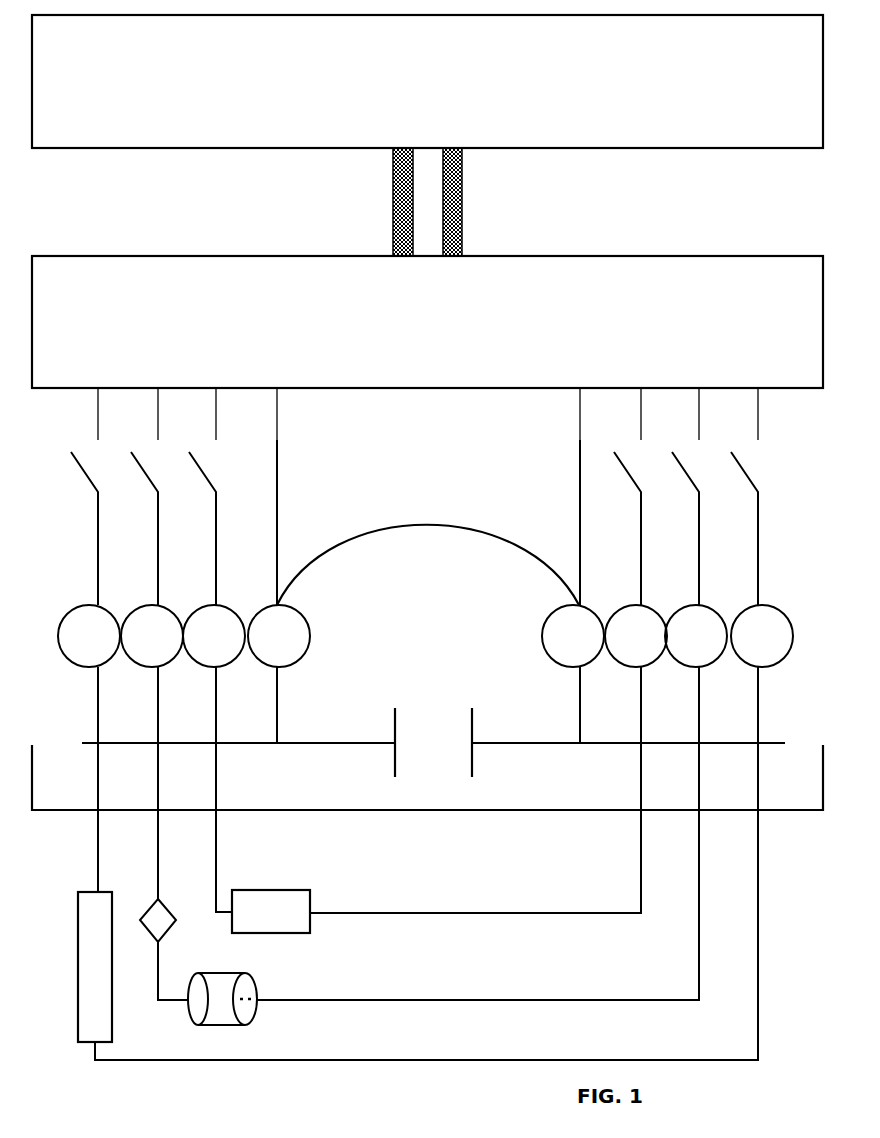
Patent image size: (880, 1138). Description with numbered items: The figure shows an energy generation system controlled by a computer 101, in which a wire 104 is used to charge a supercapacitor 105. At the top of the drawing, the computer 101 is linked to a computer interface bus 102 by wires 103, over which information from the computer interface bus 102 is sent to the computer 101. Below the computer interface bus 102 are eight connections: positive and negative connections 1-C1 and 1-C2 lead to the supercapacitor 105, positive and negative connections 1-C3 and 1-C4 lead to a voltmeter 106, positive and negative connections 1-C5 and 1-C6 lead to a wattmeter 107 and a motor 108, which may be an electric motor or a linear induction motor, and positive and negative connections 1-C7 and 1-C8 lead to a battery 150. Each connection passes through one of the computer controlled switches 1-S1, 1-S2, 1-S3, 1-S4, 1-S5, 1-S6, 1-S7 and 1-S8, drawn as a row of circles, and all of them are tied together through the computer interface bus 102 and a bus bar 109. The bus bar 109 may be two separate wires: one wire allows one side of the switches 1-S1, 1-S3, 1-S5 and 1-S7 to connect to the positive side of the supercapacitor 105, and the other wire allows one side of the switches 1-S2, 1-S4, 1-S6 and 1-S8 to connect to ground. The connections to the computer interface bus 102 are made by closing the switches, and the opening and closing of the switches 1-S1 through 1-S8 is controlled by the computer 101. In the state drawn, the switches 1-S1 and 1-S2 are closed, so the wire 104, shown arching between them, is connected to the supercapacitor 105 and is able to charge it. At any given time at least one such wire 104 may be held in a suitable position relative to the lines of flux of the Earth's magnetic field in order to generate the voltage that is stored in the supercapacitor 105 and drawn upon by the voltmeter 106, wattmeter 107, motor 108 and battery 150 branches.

The computer 101 is at (427, 81).
The computer interface bus 102 is at (427, 322).
The wires 103 is at (488, 206).
The wire 104 is at (428, 506).
The supercapacitor 105 is at (426, 682).
The voltmeter 106 is at (265, 902).
The wattmeter 107 is at (165, 925).
The motor 108 is at (250, 979).
The bus bar 109 is at (427, 777).
The battery 150 is at (105, 1005).
The positive connection to supercapacitor 1-C1 is at (277, 371).
The negative connection to supercapacitor 1-C2 is at (580, 371).
The positive connection to voltmeter 1-C3 is at (216, 371).
The negative connection to voltmeter 1-C4 is at (641, 371).
The positive connection to wattmeter and motor 1-C5 is at (158, 371).
The negative connection to wattmeter and motor 1-C6 is at (699, 371).
The positive connection to battery 1-C7 is at (98, 371).
The negative connection to battery 1-C8 is at (758, 371).
The computer controlled switch 1-S1 is at (279, 636).
The computer controlled switch 1-S2 is at (573, 636).
The computer controlled switch 1-S3 is at (214, 636).
The computer controlled switch 1-S4 is at (636, 636).
The computer controlled switch 1-S5 is at (152, 636).
The computer controlled switch 1-S6 is at (696, 636).
The computer controlled switch 1-S7 is at (89, 636).
The computer controlled switch 1-S8 is at (762, 636).